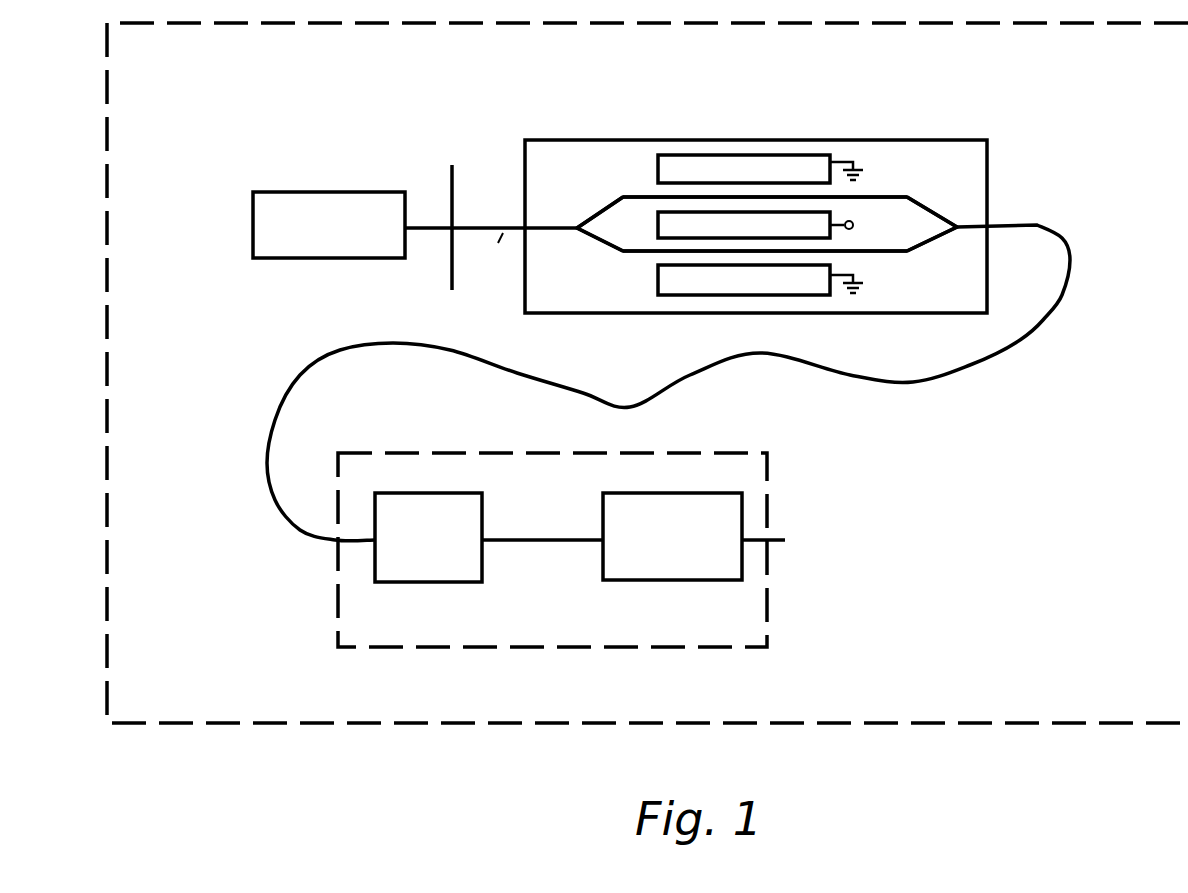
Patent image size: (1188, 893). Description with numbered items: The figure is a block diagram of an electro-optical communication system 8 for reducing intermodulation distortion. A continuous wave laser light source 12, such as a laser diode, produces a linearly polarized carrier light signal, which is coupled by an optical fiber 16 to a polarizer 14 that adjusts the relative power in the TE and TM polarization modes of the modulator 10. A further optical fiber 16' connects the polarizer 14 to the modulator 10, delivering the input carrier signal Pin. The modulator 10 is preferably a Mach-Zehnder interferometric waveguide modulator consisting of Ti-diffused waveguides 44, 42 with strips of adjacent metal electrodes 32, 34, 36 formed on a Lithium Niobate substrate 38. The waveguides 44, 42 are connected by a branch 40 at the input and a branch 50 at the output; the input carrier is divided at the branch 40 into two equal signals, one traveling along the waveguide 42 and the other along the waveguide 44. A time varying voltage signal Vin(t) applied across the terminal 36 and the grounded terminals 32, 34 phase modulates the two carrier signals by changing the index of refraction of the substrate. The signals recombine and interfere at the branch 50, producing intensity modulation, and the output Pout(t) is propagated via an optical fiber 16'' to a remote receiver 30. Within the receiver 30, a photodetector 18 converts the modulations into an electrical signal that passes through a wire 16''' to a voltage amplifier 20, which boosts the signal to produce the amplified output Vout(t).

The optical sensing system 8 is at (308, 727).
The modulator 10 is at (590, 305).
The light source 12 is at (292, 262).
The polarizer 14 is at (455, 180).
The optical fiber 16 is at (647, 390).
The optical fiber 16' is at (514, 223).
The optical fiber 16'' is at (684, 364).
The detector output line 16''' is at (542, 565).
The detector 18 is at (437, 583).
The amplifier 20 is at (690, 582).
The receiver 30 is at (770, 471).
The grounded terminal 32 is at (742, 160).
The grounded terminal 34 is at (755, 290).
The terminal 36 is at (814, 220).
The substrate 38 is at (952, 163).
The branch 40 is at (577, 222).
The waveguide 42 is at (645, 255).
The waveguide 44 is at (645, 193).
The branch 50 is at (960, 222).